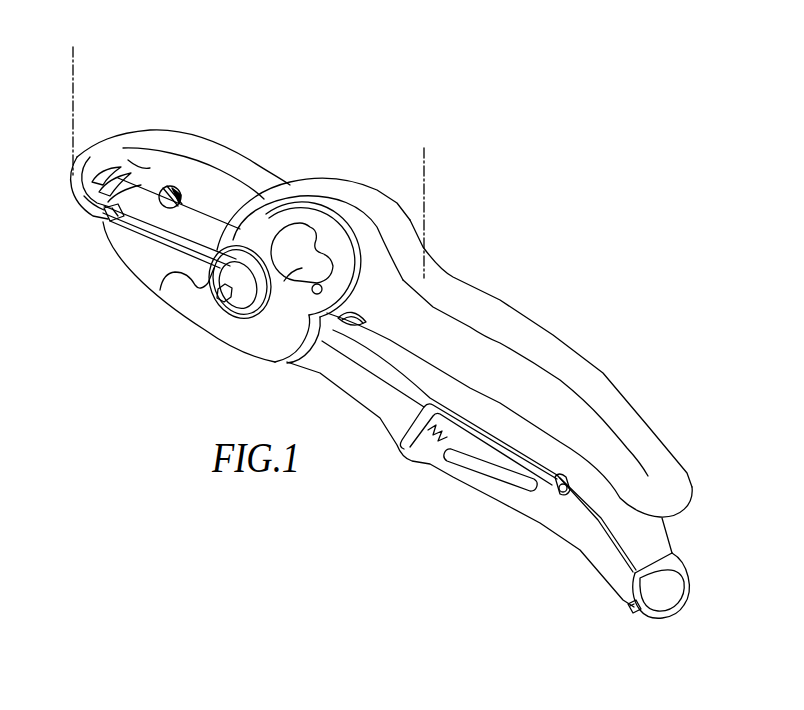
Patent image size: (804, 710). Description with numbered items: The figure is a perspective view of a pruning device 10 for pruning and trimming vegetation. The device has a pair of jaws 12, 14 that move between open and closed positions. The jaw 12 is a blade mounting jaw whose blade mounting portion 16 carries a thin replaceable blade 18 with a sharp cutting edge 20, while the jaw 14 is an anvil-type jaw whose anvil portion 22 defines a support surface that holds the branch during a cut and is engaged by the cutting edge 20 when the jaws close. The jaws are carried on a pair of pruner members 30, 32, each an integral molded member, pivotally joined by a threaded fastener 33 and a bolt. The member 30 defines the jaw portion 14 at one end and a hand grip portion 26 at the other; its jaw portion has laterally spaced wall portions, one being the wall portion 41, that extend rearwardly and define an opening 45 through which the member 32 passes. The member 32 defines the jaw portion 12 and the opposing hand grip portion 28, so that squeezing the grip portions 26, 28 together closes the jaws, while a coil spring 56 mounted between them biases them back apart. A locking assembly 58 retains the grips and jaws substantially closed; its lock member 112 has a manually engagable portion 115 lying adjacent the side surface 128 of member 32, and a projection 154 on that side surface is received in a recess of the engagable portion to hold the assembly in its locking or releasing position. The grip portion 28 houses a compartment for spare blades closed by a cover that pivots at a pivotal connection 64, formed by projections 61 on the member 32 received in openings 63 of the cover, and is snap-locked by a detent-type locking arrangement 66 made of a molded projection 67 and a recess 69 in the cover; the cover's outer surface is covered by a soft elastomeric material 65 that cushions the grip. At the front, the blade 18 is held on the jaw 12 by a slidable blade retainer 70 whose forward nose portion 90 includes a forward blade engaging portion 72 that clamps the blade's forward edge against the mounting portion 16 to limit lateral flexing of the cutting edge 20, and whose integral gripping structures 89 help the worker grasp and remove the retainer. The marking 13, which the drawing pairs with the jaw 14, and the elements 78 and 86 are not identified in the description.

The pruning device 10 is at (532, 168).
The blade mounting jaw 12 is at (230, 157).
The pivot axis 13 is at (78, 43).
The anvil-type jaw 14 is at (123, 253).
The blade mounting portion 16 is at (152, 172).
The replaceable blade 18 is at (100, 222).
The cutting edge 20 is at (108, 245).
The anvil portion 22 is at (152, 263).
The hand grip portion 26 is at (592, 383).
The hand grip portion 28 is at (326, 369).
The pruner member 30 is at (518, 322).
The pruner member 32 is at (382, 398).
The threaded fastener 33 is at (235, 312).
The wall portion 41 is at (268, 348).
The opening 45 is at (327, 344).
The coil spring 56 is at (356, 314).
The locking assembly 58 is at (294, 221).
The projections 61 is at (633, 616).
The openings 63 is at (628, 604).
The pivotal connection 64 is at (617, 612).
The elastomeric material 65 is at (472, 478).
The locking arrangement 66 is at (566, 500).
The projection 67 is at (561, 475).
The recess 69 is at (547, 497).
The blade retainer 70 is at (100, 158).
The forward blade engaging portion 72 is at (85, 193).
The blade back edge 78 is at (200, 215).
The adjustment screw 86 is at (187, 194).
The gripping structures 89 is at (93, 176).
The forward nose portion 90 is at (108, 130).
The lock member 112 is at (320, 281).
The manually engagable portion 115 is at (343, 270).
The side surface 128 is at (328, 235).
The projection 154 is at (323, 291).